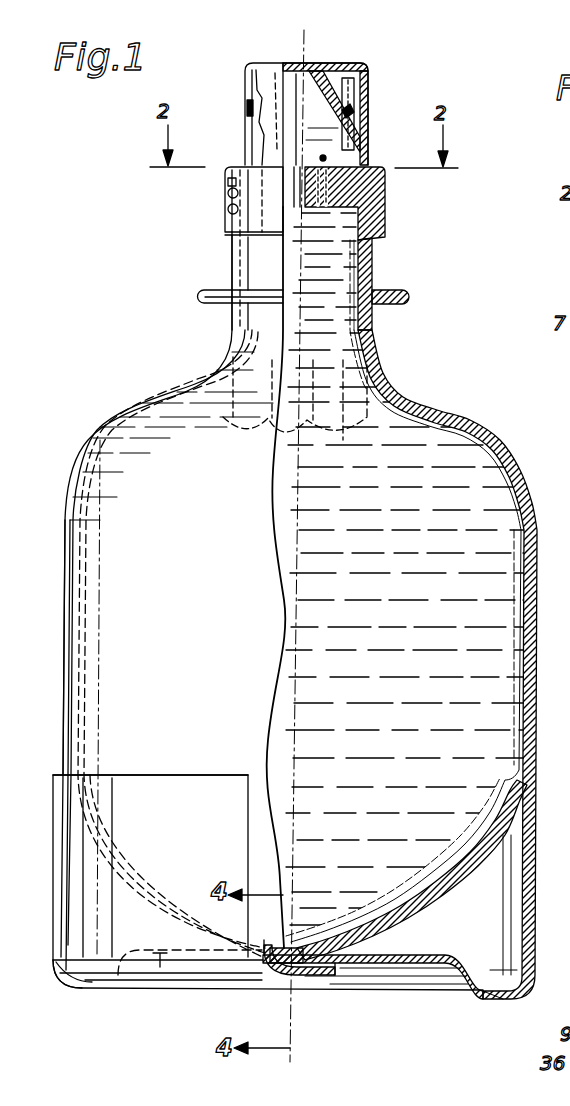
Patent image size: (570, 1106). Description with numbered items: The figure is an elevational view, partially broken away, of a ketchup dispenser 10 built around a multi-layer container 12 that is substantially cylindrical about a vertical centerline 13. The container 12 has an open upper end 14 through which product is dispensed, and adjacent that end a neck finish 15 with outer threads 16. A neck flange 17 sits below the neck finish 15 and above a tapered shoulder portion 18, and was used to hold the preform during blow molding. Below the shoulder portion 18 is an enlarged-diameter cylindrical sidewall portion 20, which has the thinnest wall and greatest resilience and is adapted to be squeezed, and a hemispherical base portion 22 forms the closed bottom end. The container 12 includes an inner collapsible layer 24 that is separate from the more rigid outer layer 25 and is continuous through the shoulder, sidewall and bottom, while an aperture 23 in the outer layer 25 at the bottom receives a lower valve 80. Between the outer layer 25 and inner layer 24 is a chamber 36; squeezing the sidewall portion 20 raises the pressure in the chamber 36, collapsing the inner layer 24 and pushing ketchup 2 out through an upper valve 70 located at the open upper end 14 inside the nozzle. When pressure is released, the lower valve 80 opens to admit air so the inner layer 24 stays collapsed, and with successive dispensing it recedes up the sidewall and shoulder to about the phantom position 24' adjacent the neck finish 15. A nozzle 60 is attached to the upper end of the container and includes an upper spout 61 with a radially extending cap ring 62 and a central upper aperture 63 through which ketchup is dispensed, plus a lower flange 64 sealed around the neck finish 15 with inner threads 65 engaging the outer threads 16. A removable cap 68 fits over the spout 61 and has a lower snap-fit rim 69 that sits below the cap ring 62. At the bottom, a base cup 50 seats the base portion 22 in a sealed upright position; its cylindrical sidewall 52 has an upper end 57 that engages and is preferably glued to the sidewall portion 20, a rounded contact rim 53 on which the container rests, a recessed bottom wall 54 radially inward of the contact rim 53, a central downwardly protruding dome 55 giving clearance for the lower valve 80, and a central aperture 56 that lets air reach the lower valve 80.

The ketchup dispenser 10 is at (162, 389).
The container 12 is at (450, 411).
The vertical centerline 13 is at (284, 640).
The open upper end 14 is at (225, 181).
The neck finish 15 is at (375, 258).
The outer threads 16 is at (387, 209).
The neck flange 17 is at (404, 302).
The shoulder portion 18 is at (487, 422).
The ketchup 2 is at (480, 505).
The sidewall portion 20 is at (62, 565).
The base portion 22 is at (480, 880).
The aperture 23 is at (335, 966).
The inner collapsible layer 24 is at (141, 652).
The phantom position of inner layer 24' is at (285, 420).
The outer layer 25 is at (64, 664).
The chamber 36 is at (436, 886).
The base cup 50 is at (52, 959).
The cylindrical sidewall 52 is at (53, 861).
The rounded contact rim 53 is at (85, 990).
The recessed bottom wall 54 is at (153, 978).
The central downwardly protruding dome 55 is at (318, 968).
The central aperture 56 is at (295, 976).
The upper end of sidewall 57 is at (62, 778).
The nozzle 60 is at (368, 107).
The upper spout 61 is at (342, 95).
The cap ring 62 is at (240, 108).
The central upper aperture 63 is at (300, 63).
The lower flange 64 is at (225, 209).
The inner threads 65 is at (222, 228).
The cap 68 is at (368, 88).
The lower snap-fit rim 69 is at (326, 156).
The upper valve 70 is at (355, 123).
The lower valve 80 is at (258, 990).